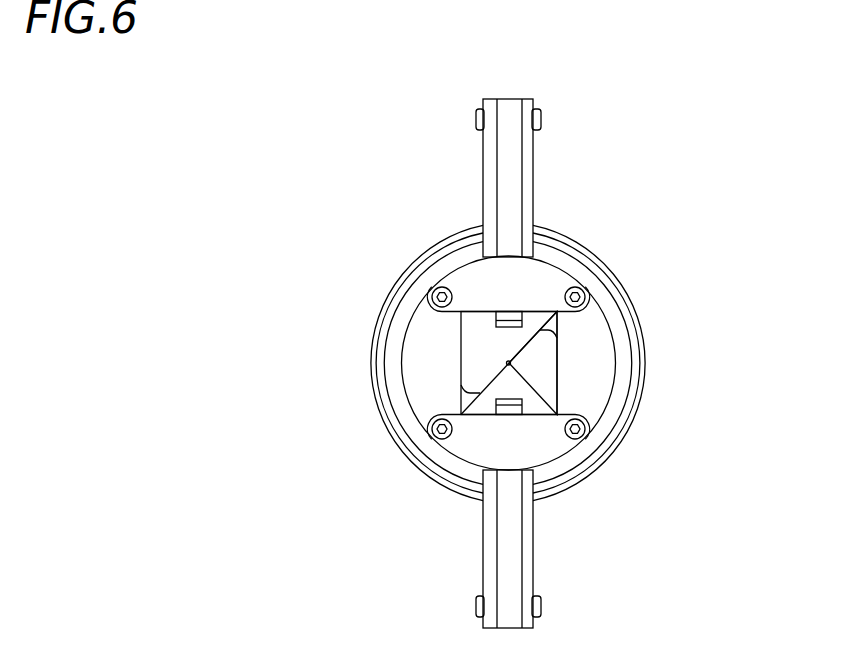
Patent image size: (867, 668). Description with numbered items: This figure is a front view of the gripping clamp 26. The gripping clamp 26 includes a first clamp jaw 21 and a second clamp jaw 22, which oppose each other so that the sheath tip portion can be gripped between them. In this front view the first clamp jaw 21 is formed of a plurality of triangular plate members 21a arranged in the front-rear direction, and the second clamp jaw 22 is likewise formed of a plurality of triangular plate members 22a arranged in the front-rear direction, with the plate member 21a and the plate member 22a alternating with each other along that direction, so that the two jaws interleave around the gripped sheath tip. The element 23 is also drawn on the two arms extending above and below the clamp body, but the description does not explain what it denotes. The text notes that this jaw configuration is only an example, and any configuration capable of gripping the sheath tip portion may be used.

The gripping clamp 26 is at (300, 172).
The arm 23 is at (535, 162).
The first clamp jaw 21 is at (392, 359).
The triangular plate member 21a is at (476, 352).
The second clamp jaw 22 is at (650, 370).
The triangular plate member 22a is at (540, 375).